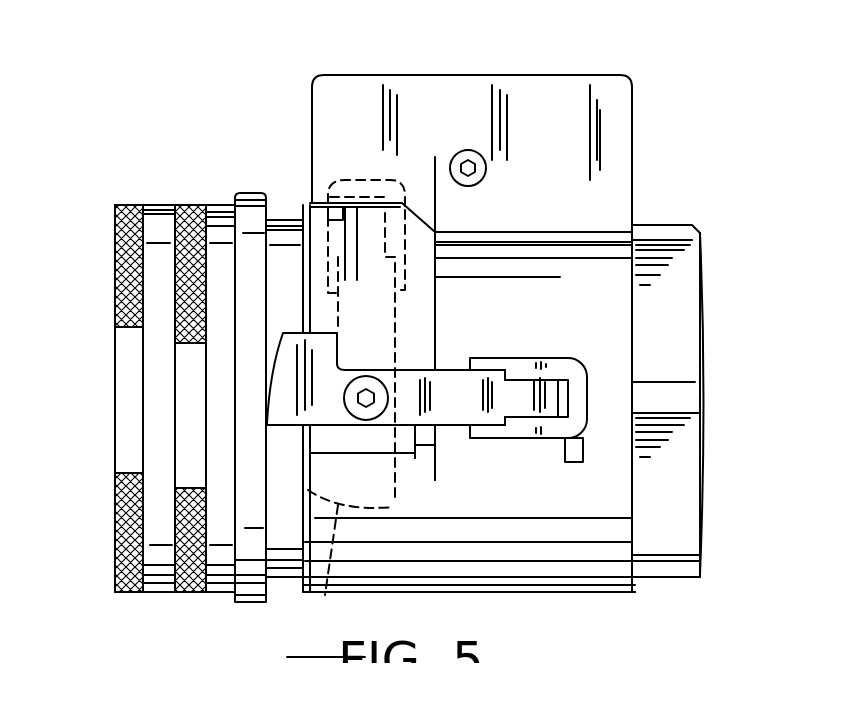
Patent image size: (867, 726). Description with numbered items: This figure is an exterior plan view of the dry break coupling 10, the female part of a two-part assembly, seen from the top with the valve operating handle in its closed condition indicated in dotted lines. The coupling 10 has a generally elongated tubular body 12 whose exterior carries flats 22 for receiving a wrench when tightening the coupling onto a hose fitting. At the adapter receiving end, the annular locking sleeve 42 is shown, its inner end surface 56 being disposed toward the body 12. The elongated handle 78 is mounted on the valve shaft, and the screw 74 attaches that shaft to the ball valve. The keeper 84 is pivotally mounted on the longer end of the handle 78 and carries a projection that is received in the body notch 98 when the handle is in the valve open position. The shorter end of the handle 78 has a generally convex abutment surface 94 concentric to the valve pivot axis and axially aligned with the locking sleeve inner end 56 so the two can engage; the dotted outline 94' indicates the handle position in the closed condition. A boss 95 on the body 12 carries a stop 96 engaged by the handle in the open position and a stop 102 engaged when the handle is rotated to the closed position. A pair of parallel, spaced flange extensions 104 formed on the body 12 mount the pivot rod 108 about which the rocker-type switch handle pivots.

The dry break coupling 10 is at (560, 607).
The tubular body 12 is at (560, 535).
The exterior flats 22 is at (668, 348).
The locking sleeve 42 is at (158, 205).
The inner end surface 56 is at (282, 205).
The screw 74 is at (350, 427).
The handle 78 is at (452, 365).
The keeper 84 is at (546, 358).
The abutment surface 94 is at (296, 406).
The latch bracket in released position 94' is at (332, 565).
The boss 95 is at (418, 298).
The stop 96 is at (428, 452).
The notch 98 is at (565, 450).
The stop 102 is at (345, 205).
The flange extensions 104 is at (563, 100).
The pivot rod 108 is at (487, 168).